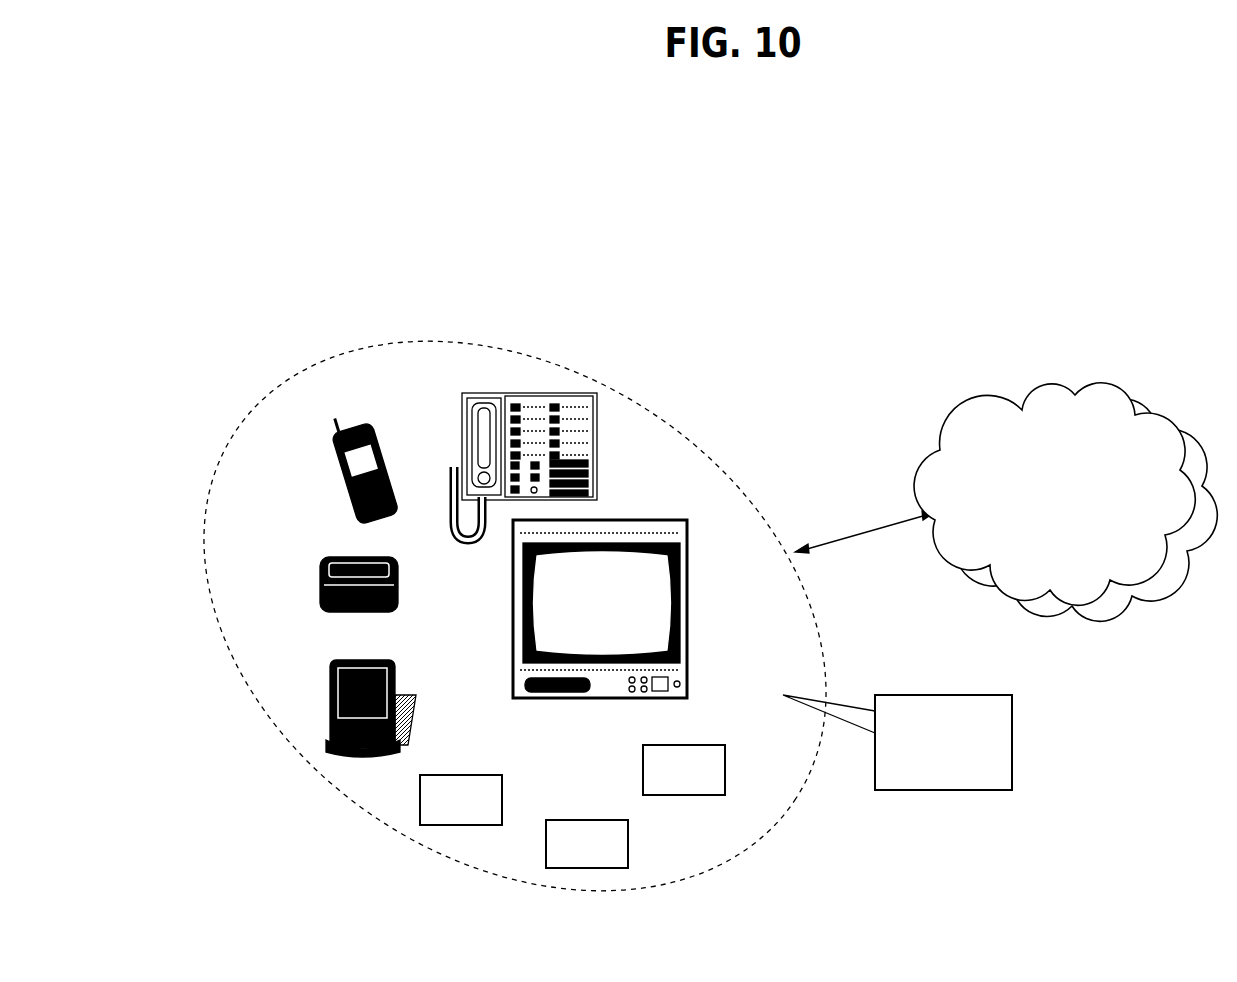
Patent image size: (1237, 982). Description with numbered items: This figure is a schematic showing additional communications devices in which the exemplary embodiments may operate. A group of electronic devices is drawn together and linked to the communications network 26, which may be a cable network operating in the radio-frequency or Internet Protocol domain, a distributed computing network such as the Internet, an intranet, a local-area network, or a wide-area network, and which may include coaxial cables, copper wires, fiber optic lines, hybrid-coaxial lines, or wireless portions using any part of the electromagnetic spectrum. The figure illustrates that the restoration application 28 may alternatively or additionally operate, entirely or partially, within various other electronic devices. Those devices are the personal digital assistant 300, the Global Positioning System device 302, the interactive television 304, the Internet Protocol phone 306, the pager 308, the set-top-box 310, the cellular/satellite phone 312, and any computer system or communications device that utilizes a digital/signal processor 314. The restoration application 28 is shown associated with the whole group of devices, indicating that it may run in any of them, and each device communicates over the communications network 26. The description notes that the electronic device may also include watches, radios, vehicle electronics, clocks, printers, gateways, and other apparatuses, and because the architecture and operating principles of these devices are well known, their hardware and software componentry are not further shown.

The communications network 26 is at (998, 392).
The restoration application 28 is at (1012, 790).
The personal digital assistant (PDA) 300 is at (332, 683).
The Global Positioning System (GPS) device 302 is at (440, 775).
The interactive television 304 is at (578, 699).
The Internet Protocol (IP) phone 306 is at (460, 403).
The pager 308 is at (320, 575).
The set-top-box (STB) 310 is at (575, 819).
The cellular/satellite phone 312 is at (347, 471).
The digital/signal processor (DP/DSP) 314 is at (726, 769).